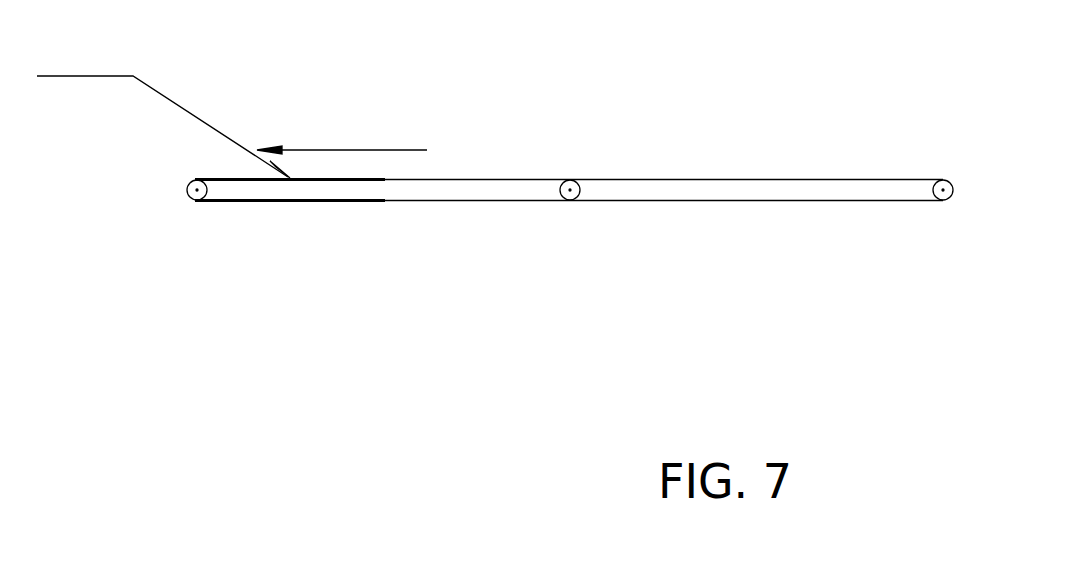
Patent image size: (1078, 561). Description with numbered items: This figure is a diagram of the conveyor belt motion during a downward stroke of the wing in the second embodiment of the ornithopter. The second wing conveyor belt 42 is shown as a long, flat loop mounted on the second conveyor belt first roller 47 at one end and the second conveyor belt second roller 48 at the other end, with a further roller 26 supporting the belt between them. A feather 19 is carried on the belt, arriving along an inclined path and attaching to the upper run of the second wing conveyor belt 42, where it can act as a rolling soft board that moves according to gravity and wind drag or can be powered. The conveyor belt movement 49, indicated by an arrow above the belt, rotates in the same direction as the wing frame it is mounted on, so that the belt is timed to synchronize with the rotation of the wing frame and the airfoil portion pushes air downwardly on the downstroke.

The feathers 19 is at (163, 110).
The second wing conveyor belt 42 is at (787, 175).
The roller 26 is at (570, 191).
The second conveyor belt first roller 47 is at (943, 200).
The second conveyor belt second roller 48 is at (188, 199).
The conveyor belt movement 49 is at (357, 150).